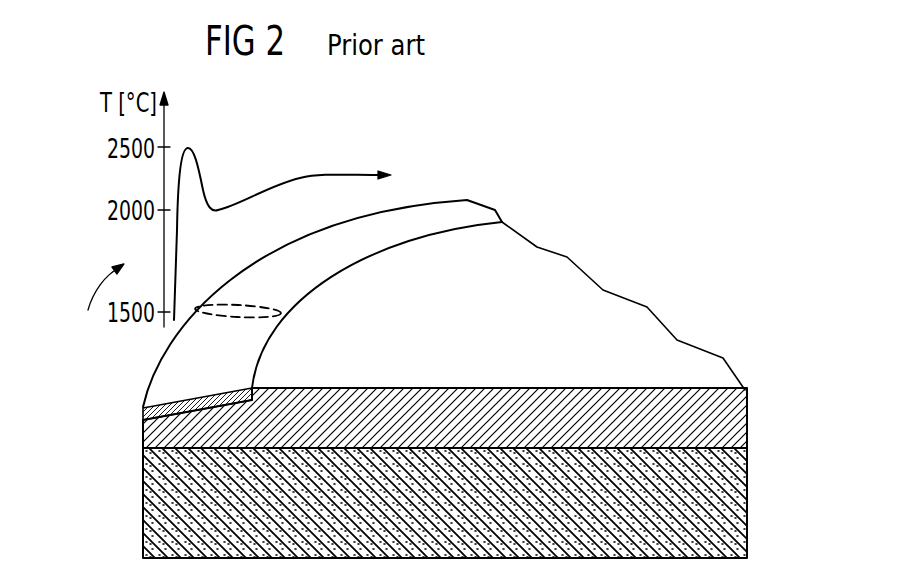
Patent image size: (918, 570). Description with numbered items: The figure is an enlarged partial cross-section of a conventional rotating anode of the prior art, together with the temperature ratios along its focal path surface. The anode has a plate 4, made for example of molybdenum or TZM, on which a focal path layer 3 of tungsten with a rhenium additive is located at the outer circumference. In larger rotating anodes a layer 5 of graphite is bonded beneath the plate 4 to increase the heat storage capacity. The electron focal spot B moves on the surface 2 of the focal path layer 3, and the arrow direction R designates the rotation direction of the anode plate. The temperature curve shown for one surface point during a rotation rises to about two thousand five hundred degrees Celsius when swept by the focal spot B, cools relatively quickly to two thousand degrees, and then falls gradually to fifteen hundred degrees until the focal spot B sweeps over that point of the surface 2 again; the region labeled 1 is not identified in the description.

The plasma jet / spray flame region 1 is at (598, 226).
The surface of the focal path layer 2 is at (429, 219).
The focal path layer 3 is at (143, 412).
The plate 4 is at (740, 418).
The layer of graphite 5 is at (740, 513).
The focal spot B is at (257, 307).
The arrow direction R is at (101, 287).